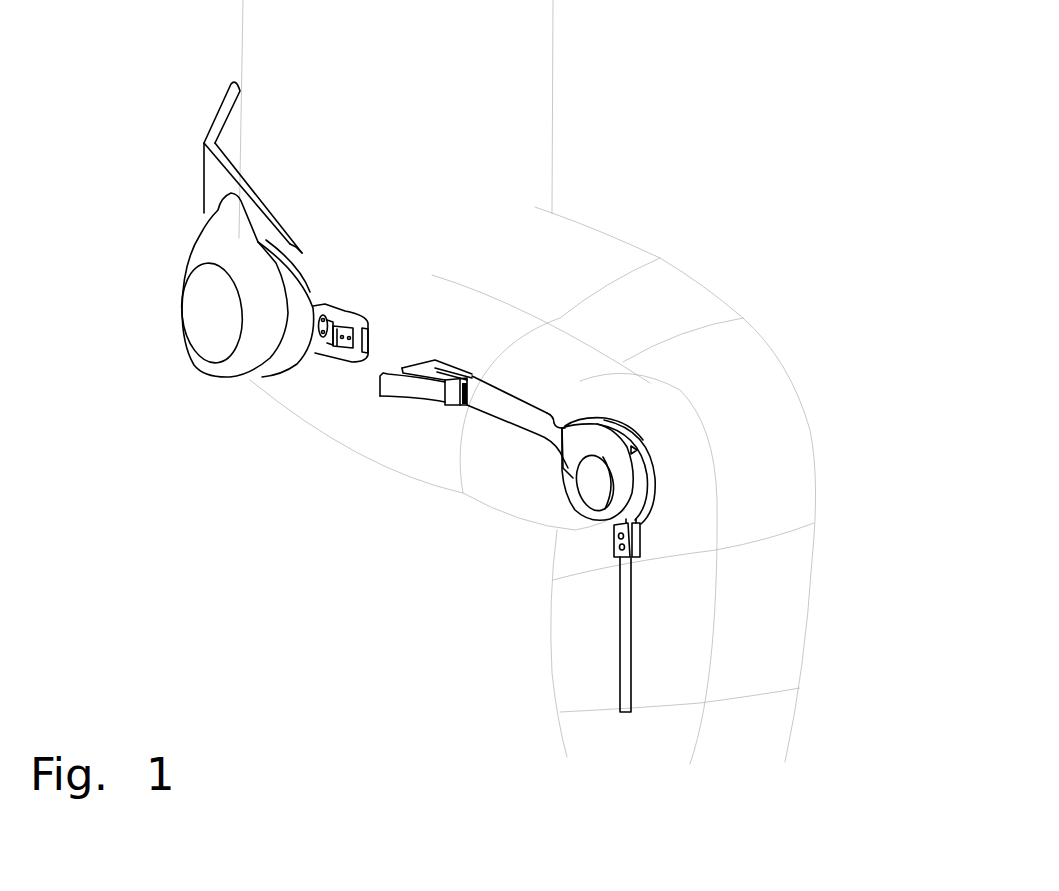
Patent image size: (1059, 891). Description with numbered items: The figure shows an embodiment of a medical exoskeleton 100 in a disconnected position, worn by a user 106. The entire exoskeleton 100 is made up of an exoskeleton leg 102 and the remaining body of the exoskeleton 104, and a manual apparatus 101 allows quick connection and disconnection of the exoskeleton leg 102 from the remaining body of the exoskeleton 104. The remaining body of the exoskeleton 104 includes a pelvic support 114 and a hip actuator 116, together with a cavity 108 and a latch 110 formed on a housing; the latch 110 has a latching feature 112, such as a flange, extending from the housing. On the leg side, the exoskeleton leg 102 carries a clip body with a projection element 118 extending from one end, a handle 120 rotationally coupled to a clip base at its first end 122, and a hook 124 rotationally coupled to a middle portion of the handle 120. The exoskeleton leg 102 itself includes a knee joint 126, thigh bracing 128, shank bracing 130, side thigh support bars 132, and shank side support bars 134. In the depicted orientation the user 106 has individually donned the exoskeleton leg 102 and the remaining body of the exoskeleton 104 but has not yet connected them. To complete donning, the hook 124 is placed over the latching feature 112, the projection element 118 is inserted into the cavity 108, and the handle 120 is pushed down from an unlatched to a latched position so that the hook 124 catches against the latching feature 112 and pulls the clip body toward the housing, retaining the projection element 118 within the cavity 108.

The exoskeleton 100 is at (182, 630).
The manual apparatus 101 is at (387, 330).
The exoskeleton leg 102 is at (403, 595).
The remaining body of the exoskeleton 104 is at (143, 120).
The user 106 is at (555, 100).
The cavity 108 is at (356, 362).
The latch 110 is at (333, 347).
The latching feature 112 is at (318, 333).
The pelvic support 114 is at (200, 158).
The hip actuator 116 is at (183, 275).
The projection element 118 is at (407, 362).
The handle 120 is at (455, 407).
The first end 122 is at (469, 380).
The hook 124 is at (387, 398).
The knee joint 126 is at (583, 510).
The thigh bracing 128 is at (703, 285).
The shank bracing 130 is at (552, 645).
The side thigh support bars 132 is at (507, 420).
The shank side support bars 134 is at (620, 650).